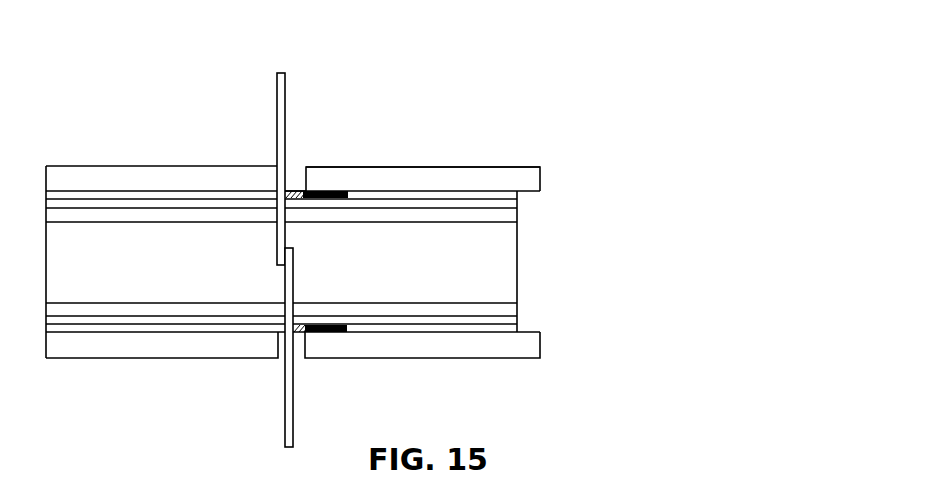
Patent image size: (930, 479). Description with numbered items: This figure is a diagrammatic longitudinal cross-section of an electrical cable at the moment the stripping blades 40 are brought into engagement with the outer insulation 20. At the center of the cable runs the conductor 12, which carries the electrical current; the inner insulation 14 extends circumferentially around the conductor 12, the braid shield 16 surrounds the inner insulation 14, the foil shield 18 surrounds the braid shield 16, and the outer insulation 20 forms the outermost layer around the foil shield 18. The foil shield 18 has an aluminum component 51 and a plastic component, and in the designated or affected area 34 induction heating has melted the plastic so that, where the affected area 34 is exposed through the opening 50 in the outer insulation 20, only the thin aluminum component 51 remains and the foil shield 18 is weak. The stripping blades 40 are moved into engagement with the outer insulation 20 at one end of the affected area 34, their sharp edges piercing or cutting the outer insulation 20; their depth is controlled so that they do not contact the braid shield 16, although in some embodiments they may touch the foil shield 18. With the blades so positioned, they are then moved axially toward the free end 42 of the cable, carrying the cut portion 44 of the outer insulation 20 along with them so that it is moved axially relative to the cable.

The conductor 12 is at (371, 293).
The inner insulation 14 is at (517, 213).
The braid shield 16 is at (517, 203).
The foil shield 18 is at (140, 193).
The outer insulation 20 is at (103, 173).
The designated or affected area 34 is at (327, 191).
The stripping blades 40 is at (277, 95).
The free end 42 is at (517, 265).
The cut portion 44 is at (392, 167).
The opening 50 is at (302, 158).
The aluminum component 51 is at (292, 187).